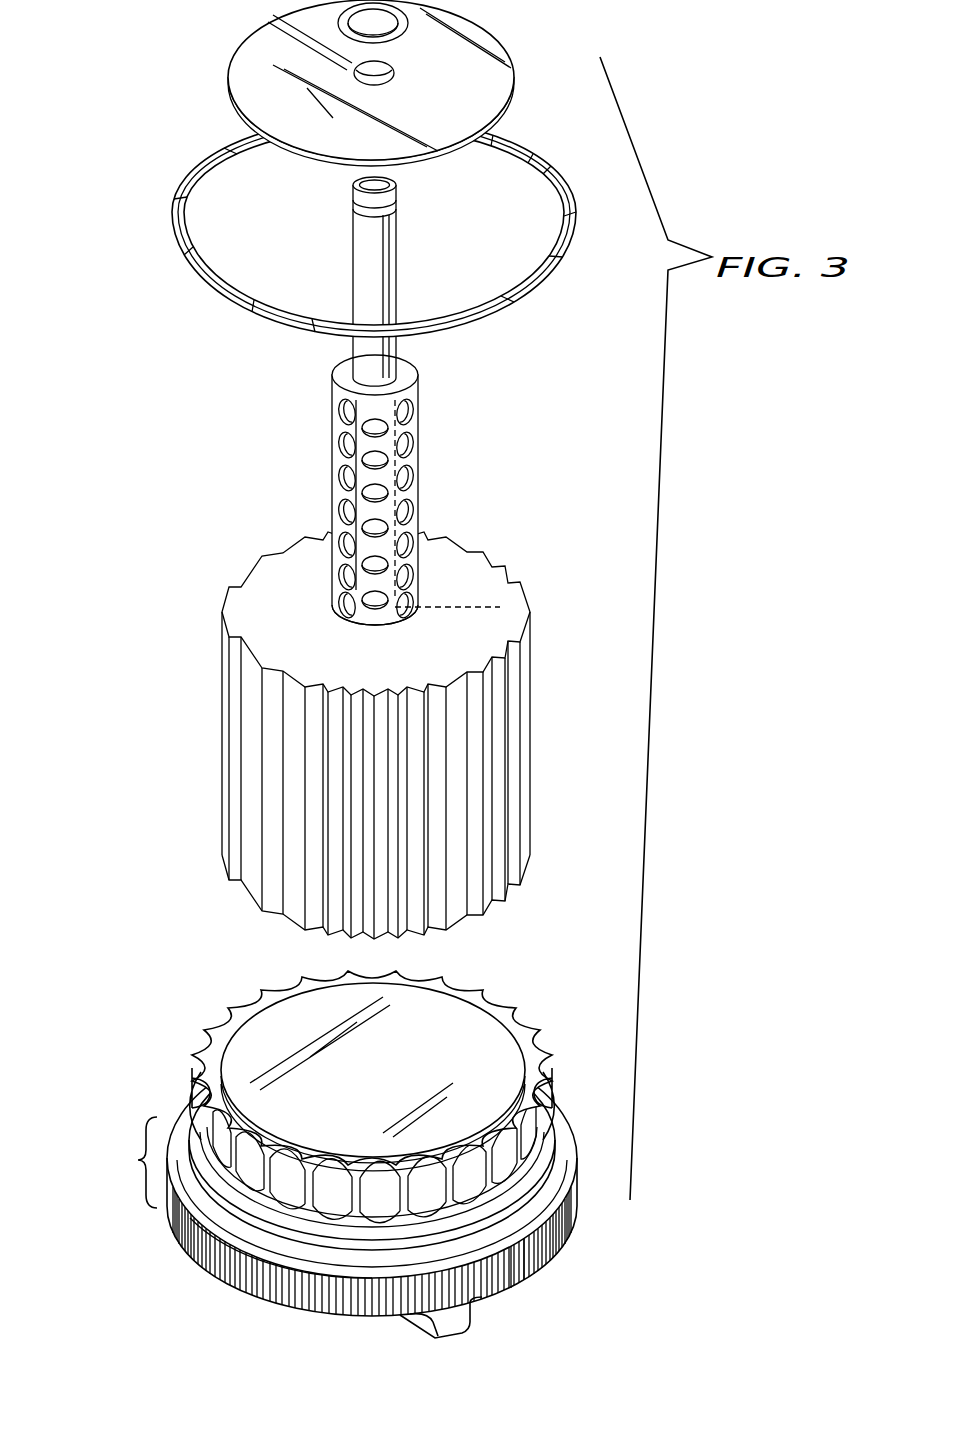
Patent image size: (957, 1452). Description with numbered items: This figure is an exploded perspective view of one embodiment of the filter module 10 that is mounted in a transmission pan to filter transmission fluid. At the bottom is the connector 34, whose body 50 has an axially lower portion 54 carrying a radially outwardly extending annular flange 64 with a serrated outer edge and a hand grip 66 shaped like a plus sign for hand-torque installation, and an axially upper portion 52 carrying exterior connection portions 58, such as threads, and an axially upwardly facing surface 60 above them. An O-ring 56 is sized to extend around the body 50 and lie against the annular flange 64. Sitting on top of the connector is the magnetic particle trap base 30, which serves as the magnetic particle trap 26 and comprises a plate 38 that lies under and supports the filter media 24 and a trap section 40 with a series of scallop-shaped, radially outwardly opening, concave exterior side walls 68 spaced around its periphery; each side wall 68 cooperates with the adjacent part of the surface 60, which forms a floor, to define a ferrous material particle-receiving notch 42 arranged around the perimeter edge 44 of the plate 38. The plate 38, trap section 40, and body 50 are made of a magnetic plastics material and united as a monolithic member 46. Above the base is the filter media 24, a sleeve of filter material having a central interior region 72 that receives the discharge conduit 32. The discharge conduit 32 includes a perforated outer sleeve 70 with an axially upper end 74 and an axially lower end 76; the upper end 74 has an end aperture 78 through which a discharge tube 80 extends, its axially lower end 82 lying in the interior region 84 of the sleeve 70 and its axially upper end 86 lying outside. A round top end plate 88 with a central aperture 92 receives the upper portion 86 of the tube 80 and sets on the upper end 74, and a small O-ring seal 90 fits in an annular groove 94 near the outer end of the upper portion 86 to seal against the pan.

The filter module 10 is at (90, 185).
The filter media 24 is at (412, 721).
The magnetic particle trap 26 is at (346, 1063).
The magnetic particle trap base 30 is at (410, 1127).
The discharge conduit 32 is at (356, 503).
The connector 34 is at (377, 1188).
The plate 38 is at (455, 1017).
The trap section 40 is at (192, 1066).
The ferrous material particle-receiving notch 42 is at (244, 1158).
The perimeter edge 44 is at (237, 1013).
The monolithic member 46 is at (577, 1117).
The body 50 is at (127, 1162).
The axially upper portion 52 is at (555, 1161).
The axially lower portion 54 is at (554, 1272).
The O-ring 56 is at (545, 286).
The exterior connection portions 58 is at (227, 1198).
The axially upwardly facing surface 60 is at (366, 1207).
The annular flange 64 is at (523, 1263).
The hand grip 66 is at (457, 1318).
The exterior side wall 68 is at (283, 1168).
The perforated outer sleeve 70 is at (412, 493).
The interior region 72 is at (449, 597).
The axially upper end 74 is at (343, 385).
The axially lower end 76 is at (398, 612).
The end aperture 78 is at (388, 367).
The discharge tube 80 is at (384, 281).
The axially lower end 82 is at (383, 530).
The interior region 84 is at (518, 600).
The axially upper end 86 is at (362, 251).
The top end plate 88 is at (398, 83).
The O-ring seal 90 is at (393, 38).
The central aperture 92 is at (380, 77).
The annular groove 94 is at (399, 206).